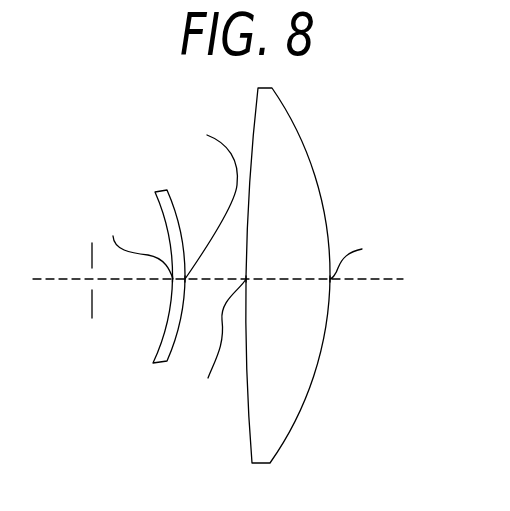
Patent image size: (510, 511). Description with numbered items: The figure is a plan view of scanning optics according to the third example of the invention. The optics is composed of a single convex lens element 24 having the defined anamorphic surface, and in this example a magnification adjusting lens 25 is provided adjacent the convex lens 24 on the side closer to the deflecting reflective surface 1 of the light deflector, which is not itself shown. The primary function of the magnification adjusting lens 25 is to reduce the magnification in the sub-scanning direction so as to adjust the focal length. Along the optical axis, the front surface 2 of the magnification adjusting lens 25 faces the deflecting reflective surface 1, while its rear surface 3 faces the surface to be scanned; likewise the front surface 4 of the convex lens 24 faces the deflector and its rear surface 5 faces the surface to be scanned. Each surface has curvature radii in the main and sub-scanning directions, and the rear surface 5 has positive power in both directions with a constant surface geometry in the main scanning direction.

The deflecting reflective surface 1 is at (83, 280).
The front surface of the magnification adjusting lens 2 is at (161, 294).
The rear surface of the magnification adjusting lens 3 is at (195, 294).
The front surface of the convex lens 4 is at (236, 264).
The rear surface of the convex lens 5 is at (341, 295).
The convex lens element 24 is at (328, 231).
The magnification adjusting lens 25 is at (185, 251).